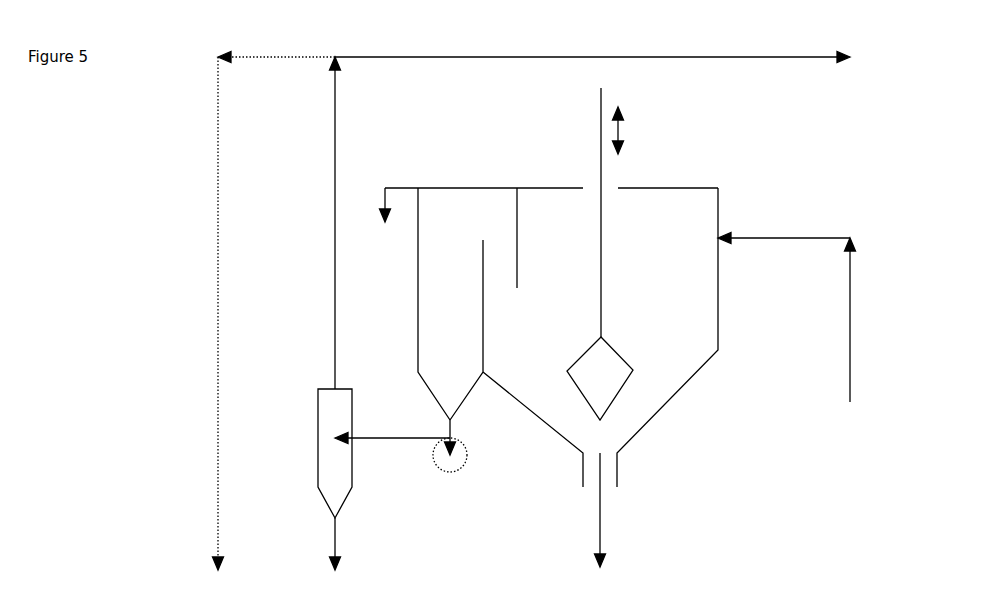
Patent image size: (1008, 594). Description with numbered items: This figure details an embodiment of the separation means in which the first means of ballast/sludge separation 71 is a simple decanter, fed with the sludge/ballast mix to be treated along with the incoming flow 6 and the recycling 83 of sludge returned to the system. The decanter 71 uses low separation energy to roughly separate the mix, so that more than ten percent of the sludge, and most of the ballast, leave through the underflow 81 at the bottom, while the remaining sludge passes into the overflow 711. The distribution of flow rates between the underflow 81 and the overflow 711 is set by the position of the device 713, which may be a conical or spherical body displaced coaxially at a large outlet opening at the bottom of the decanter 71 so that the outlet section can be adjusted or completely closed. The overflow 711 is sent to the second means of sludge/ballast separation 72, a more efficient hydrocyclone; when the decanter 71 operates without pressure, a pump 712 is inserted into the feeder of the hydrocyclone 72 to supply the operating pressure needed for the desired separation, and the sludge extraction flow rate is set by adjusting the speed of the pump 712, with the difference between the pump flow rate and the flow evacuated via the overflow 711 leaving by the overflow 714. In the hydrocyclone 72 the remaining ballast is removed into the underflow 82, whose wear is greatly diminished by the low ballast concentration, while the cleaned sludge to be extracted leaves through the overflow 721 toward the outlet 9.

The outlet 9 is at (592, 33).
The recycling 83 is at (243, 311).
The overflow 721 is at (335, 305).
The second means of sludge/ballast separation 72 is at (306, 453).
The underflow 82 is at (304, 544).
The overflow 714 is at (368, 173).
The first means of ballast/sludge separation 71 is at (551, 287).
The device 713 is at (617, 370).
The inlet stream 6 is at (817, 318).
The pump 712 is at (483, 453).
The overflow 711 is at (402, 438).
The underflow 81 is at (569, 510).